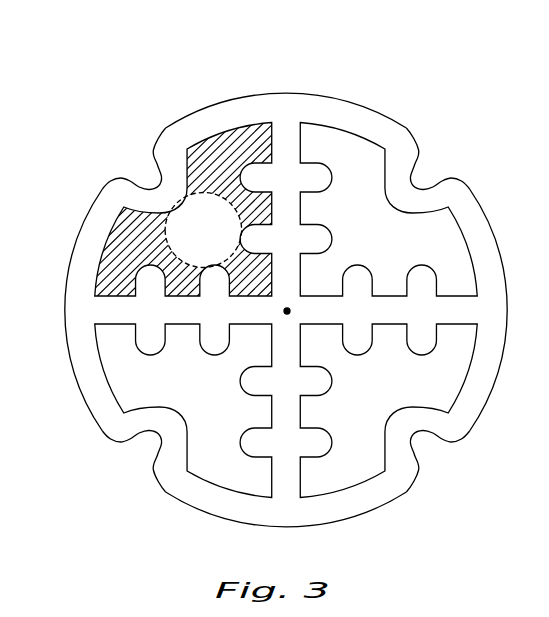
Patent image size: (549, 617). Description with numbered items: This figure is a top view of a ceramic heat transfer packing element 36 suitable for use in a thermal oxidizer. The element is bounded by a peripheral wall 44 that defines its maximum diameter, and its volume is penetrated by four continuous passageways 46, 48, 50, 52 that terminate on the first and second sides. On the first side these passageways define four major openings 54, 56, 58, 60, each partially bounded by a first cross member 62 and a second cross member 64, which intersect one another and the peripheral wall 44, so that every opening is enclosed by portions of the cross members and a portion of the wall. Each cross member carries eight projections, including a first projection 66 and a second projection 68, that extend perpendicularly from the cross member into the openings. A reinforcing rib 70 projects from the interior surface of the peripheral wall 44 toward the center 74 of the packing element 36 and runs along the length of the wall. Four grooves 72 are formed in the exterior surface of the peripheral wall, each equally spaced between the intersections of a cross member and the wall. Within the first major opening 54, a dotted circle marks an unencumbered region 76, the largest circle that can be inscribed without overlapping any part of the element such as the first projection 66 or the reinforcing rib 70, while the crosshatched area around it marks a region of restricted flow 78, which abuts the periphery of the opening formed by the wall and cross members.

The heat transfer packing element 36 is at (80, 80).
The peripheral wall 44 is at (370, 120).
The continuous passageway 46 is at (113, 262).
The continuous passageway 48 is at (446, 231).
The continuous passageway 50 is at (434, 381).
The continuous passageway 52 is at (119, 364).
The first major opening 54 is at (233, 170).
The major opening 56 is at (367, 213).
The major opening 58 is at (382, 408).
The major opening 60 is at (202, 383).
The first cross member 62 is at (452, 296).
The second cross member 64 is at (293, 147).
The first projection 66 is at (252, 442).
The second projection 68 is at (250, 378).
The reinforcing rib 70 is at (170, 398).
The groove 72 is at (153, 443).
The center 74 is at (287, 311).
The unencumbered region 76 is at (135, 251).
The region of restricted flow 78 is at (134, 252).